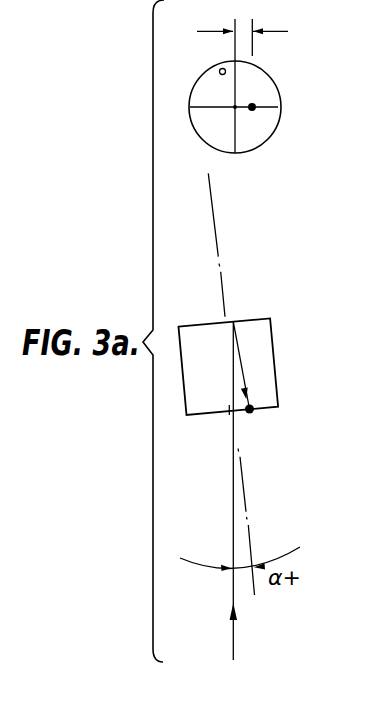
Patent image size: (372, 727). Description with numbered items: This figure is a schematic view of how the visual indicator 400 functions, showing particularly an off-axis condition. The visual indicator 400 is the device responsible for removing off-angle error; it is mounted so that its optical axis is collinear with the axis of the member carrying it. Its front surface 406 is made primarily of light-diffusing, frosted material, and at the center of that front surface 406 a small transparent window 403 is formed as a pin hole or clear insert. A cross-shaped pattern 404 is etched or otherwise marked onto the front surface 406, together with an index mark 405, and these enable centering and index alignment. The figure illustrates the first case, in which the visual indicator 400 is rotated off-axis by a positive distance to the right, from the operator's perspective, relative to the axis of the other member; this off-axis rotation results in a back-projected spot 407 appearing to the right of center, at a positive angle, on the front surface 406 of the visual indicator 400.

The visual indicator 400 is at (338, 132).
The transparent window 403 is at (233, 109).
The cross-shaped pattern 404 is at (275, 104).
The index mark 405 is at (219, 68).
The front surface 406 is at (260, 145).
The back-projected spot 407 is at (253, 103).